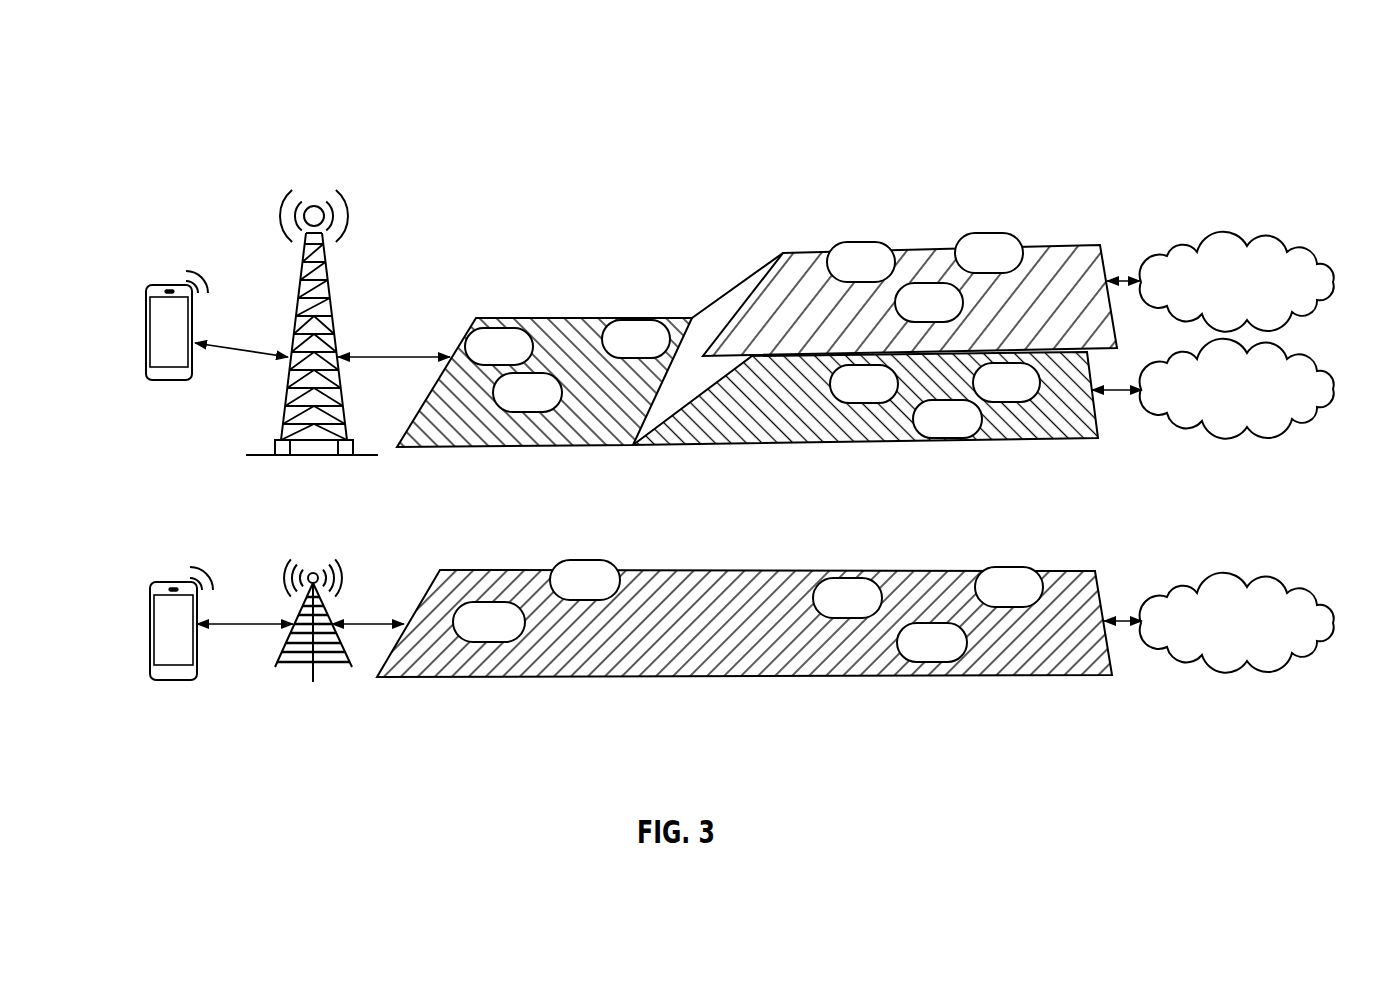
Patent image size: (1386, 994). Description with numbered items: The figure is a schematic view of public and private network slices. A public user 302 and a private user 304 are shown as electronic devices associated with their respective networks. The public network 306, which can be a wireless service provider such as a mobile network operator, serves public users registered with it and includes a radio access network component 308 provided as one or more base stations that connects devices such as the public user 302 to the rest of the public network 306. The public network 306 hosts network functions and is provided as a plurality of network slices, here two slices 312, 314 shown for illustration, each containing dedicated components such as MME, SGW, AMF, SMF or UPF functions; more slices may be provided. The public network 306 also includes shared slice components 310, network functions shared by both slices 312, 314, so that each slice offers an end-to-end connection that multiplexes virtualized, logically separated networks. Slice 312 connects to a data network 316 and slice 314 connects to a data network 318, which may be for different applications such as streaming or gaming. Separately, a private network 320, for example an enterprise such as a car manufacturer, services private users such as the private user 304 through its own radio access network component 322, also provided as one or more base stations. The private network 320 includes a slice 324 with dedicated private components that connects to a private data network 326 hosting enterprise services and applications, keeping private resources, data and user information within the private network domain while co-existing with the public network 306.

The public user 302 is at (166, 394).
The private user 304 is at (168, 691).
The public network 306 is at (1251, 160).
The radio access network component 308 is at (314, 170).
The shared slice components 310 is at (630, 296).
The slice 312 is at (1118, 318).
The slice 314 is at (1100, 428).
The data network 316 is at (1272, 248).
The data network 318 is at (1283, 356).
The private network 320 is at (1186, 527).
The radio access network component 322 is at (314, 555).
The slice 324 is at (1110, 664).
The private data network 326 is at (1284, 590).